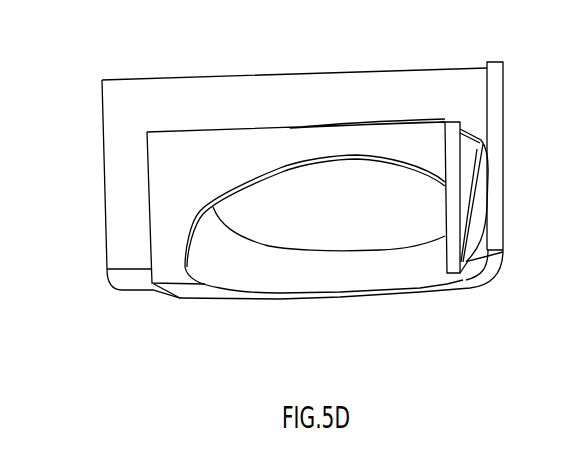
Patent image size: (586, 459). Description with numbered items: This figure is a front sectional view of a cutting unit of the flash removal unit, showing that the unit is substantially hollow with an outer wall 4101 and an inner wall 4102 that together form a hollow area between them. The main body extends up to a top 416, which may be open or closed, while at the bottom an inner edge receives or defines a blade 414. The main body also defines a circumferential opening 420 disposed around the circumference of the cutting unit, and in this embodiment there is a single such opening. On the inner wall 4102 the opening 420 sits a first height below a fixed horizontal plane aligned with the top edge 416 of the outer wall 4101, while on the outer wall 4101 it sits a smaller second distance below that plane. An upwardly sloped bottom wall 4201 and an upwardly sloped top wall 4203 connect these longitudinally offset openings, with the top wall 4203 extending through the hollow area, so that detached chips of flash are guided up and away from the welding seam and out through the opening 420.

The outer wall 4101 is at (163, 100).
The top 416 is at (366, 67).
The blade 414 is at (177, 306).
The inner wall 4102 is at (152, 203).
The circumferential opening 420 is at (365, 218).
The upwardly sloped bottom wall 4201 is at (381, 275).
The upwardly sloped top wall 4203 is at (473, 171).